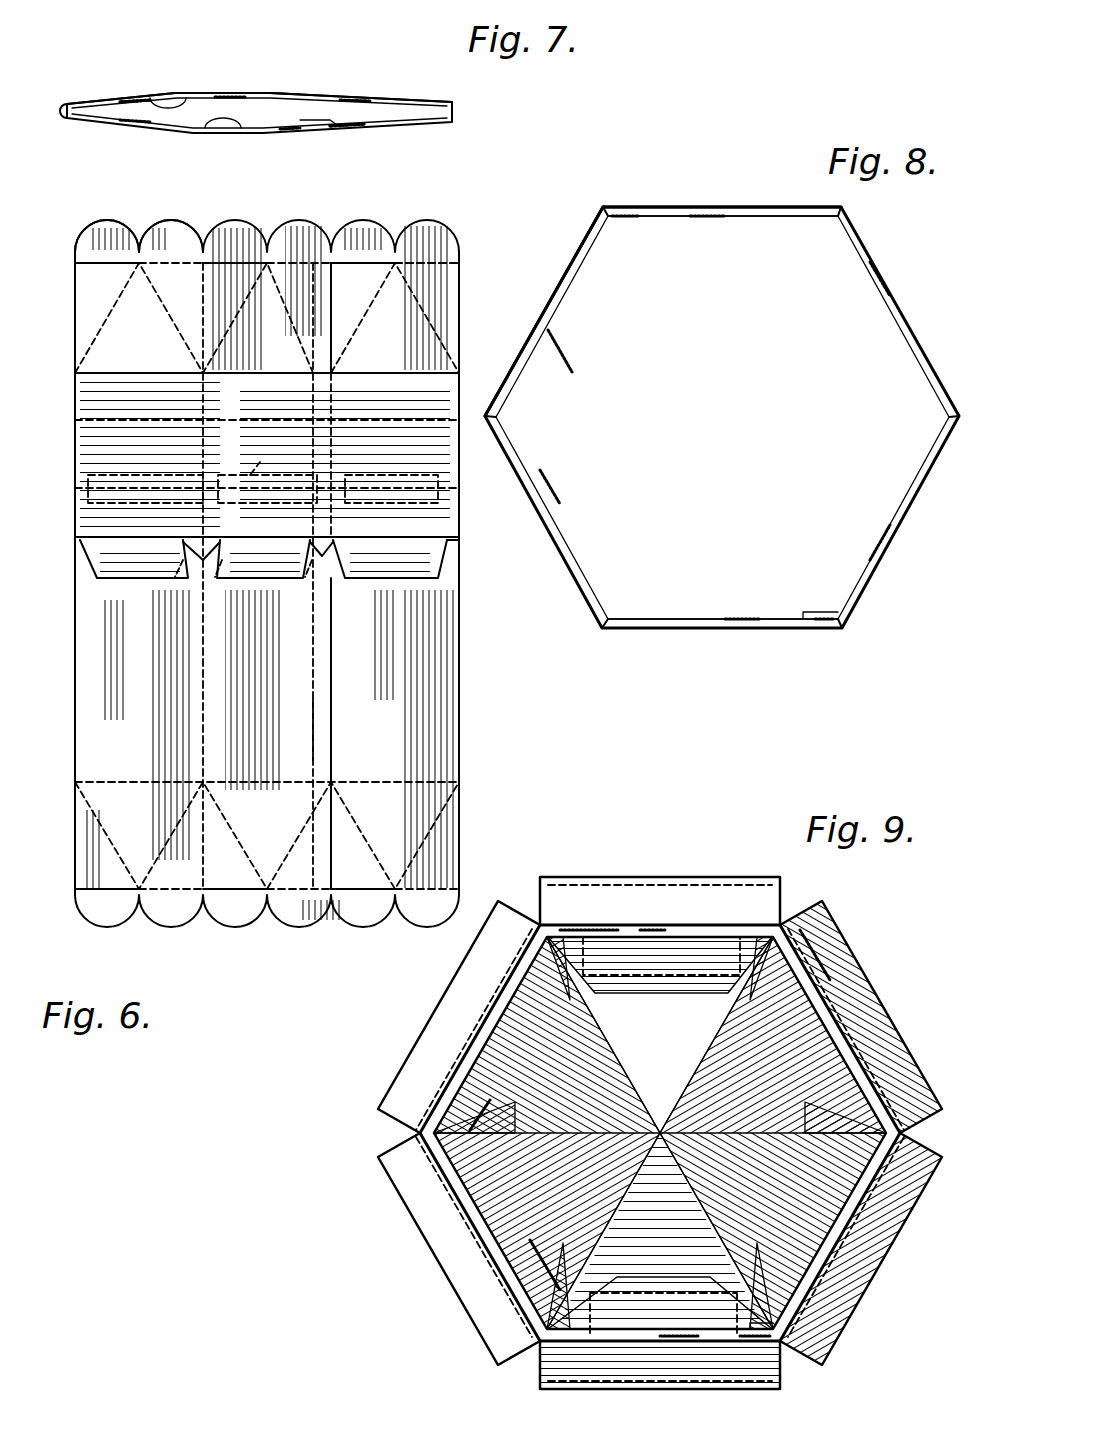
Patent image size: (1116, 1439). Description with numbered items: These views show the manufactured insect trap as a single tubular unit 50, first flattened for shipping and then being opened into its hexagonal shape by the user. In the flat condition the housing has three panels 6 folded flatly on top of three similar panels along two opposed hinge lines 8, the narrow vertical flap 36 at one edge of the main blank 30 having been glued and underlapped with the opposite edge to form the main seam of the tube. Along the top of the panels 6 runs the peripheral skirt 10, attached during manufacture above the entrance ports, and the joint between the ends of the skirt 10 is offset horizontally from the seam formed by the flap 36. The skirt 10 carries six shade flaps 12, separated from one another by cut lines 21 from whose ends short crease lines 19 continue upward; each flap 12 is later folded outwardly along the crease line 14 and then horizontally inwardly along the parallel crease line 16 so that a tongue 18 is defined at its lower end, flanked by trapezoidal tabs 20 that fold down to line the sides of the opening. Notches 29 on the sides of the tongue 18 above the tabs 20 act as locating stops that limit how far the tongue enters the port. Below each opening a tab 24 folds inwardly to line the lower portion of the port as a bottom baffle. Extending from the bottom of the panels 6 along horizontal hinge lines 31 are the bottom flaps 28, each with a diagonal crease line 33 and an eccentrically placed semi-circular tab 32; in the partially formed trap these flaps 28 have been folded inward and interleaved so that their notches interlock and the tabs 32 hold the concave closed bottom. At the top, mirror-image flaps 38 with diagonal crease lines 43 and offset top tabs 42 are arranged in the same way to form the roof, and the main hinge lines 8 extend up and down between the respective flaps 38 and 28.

In FIG. 8, the panels 6 is at (782, 218).
In FIG. 7, the hinge lines 8 is at (180, 102).
In FIG. 6, the hinge lines 8 is at (455, 287).
In FIG. 8, the hinge lines 8 is at (607, 222).
In FIG. 7, the peripheral skirt 10 is at (428, 80).
In FIG. 6, the peripheral skirt 10 is at (437, 364).
In FIG. 8, the peripheral skirt 10 is at (704, 642).
In FIG. 9, the peripheral skirt 10 is at (660, 1133).
In FIG. 6, the flaps 12 is at (267, 457).
In FIG. 9, the flaps 12 is at (430, 1031).
In FIG. 6, the crease line 14 is at (350, 418).
In FIG. 6, the crease line 16 is at (153, 488).
In FIG. 6, the tongue 18 is at (150, 552).
In FIG. 9, the tongue 18 is at (545, 1042).
In FIG. 7, the short crease lines 19 is at (66, 107).
In FIG. 6, the tabs 20 is at (447, 542).
In FIG. 9, the tabs 20 is at (565, 1010).
In FIG. 8, the cut lines 21 is at (603, 205).
In FIG. 6, the tab 24 is at (257, 472).
In FIG. 9, the tab 24 is at (645, 975).
In FIG. 9, the flaps 28 is at (562, 1096).
In FIG. 6, the notches 29 is at (457, 542).
In FIG. 7, the main blank 30 is at (300, 98).
In FIG. 8, the main blank 30 is at (690, 600).
In FIG. 6, the horizontal hinge lines 31 is at (385, 762).
In FIG. 6, the semi-circular tab portion 32 is at (190, 928).
In FIG. 6, the diagonal crease line 33 is at (110, 836).
In FIG. 9, the diagonal crease line 33 is at (610, 1045).
In FIG. 7, the vertical flap 36 is at (345, 126).
In FIG. 6, the vertical flap 36 is at (313, 727).
In FIG. 8, the vertical flap 36 is at (825, 612).
In FIG. 9, the vertical flap 36 is at (795, 1340).
In FIG. 6, the top flaps 38 is at (154, 366).
In FIG. 7, the top tabs 42 is at (125, 100).
In FIG. 6, the top tabs 42 is at (170, 233).
In FIG. 8, the top tabs 42 is at (718, 217).
In FIG. 9, the top tabs 42 is at (618, 930).
In FIG. 6, the diagonal crease line 43 is at (110, 315).
In FIG. 7, the tubular unit 50 is at (272, 58).
In FIG. 6, the tubular unit 50 is at (516, 726).
In FIG. 8, the tubular unit 50 is at (744, 176).